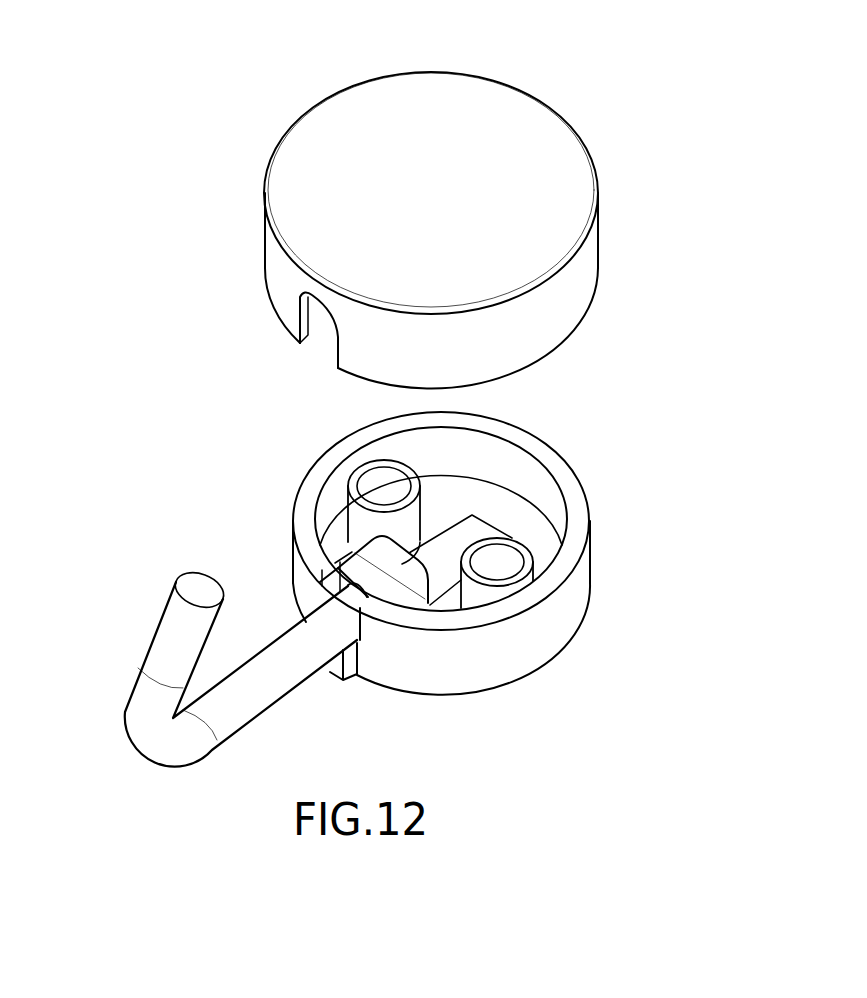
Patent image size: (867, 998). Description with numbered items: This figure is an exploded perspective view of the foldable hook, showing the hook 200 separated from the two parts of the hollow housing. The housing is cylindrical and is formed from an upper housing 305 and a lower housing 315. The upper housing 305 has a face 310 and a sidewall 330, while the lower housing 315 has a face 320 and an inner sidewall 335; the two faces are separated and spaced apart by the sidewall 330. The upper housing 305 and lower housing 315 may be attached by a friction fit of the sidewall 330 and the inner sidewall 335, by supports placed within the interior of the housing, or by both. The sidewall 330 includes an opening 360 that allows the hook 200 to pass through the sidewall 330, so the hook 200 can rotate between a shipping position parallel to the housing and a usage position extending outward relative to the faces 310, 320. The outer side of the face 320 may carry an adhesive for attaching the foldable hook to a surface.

The hook 200 is at (98, 721).
The upper housing 305 is at (327, 100).
The face 310 is at (448, 105).
The lower housing 315 is at (583, 570).
The face 320 is at (462, 492).
The sidewall 330 is at (575, 273).
The inner sidewall 335 is at (320, 477).
The opening 360 is at (318, 340).